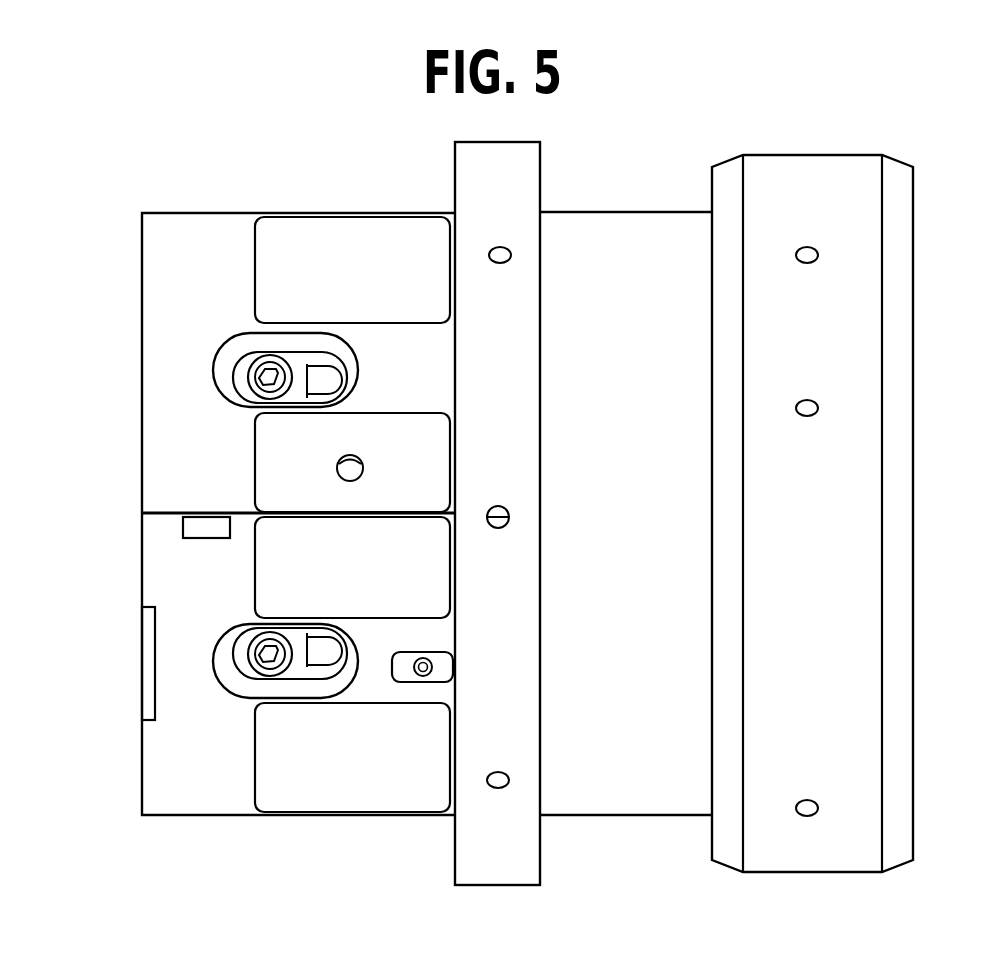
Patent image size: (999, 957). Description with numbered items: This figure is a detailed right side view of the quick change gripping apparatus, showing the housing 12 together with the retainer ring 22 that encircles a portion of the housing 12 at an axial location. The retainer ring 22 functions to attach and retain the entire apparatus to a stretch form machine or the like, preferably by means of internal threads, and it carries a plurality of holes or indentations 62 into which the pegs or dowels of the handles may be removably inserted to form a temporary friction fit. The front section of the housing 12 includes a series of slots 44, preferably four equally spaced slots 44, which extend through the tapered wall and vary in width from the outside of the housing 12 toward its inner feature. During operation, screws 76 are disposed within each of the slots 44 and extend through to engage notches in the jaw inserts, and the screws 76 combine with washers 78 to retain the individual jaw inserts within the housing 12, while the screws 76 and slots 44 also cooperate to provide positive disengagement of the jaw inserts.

The housing 12 is at (173, 233).
The retainer ring 22 is at (857, 203).
The slots 44 is at (248, 372).
The holes or indentations 62 is at (500, 264).
The screws 76 is at (266, 372).
The washers 78 is at (300, 372).